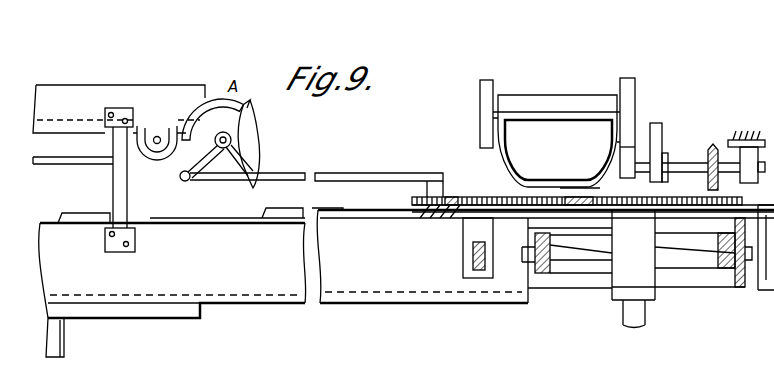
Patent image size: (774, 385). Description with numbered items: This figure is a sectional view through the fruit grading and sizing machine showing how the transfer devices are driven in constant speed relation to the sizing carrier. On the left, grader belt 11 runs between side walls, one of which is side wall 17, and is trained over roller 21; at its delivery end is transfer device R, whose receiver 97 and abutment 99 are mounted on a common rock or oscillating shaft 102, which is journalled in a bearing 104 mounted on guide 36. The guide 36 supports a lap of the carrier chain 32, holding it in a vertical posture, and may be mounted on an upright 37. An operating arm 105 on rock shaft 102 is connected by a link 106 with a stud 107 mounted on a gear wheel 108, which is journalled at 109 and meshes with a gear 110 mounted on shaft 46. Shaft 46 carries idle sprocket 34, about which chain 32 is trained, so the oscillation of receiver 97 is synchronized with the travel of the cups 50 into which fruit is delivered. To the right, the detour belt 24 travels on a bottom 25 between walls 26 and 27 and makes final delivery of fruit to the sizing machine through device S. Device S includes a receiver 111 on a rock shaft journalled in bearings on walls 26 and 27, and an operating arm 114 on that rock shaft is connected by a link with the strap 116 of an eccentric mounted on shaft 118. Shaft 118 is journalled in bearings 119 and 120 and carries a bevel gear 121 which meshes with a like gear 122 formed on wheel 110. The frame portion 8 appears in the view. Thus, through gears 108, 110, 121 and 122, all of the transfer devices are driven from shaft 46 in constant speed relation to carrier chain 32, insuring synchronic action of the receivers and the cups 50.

The frame 8 is at (470, 160).
The grader belt 11 is at (48, 154).
The side wall 17 is at (74, 102).
The roller 21 is at (153, 152).
The detour belt 24 is at (566, 95).
The bottom 25 is at (8, 139).
The wall 26 is at (485, 82).
The wall 27 is at (629, 80).
The chain 32 is at (357, 222).
The idle sprocket 34 is at (589, 258).
The guide 36 is at (270, 275).
The upright 37 is at (62, 340).
The shaft 46 is at (628, 321).
The cup 50 is at (72, 204).
The receiver 97 is at (244, 151).
The abutment 99 is at (230, 99).
The rock shaft 102 is at (229, 136).
The bearing 104 is at (216, 196).
The operating arm 105 is at (182, 178).
The link 106 is at (348, 172).
The stud 107 is at (434, 185).
The gear wheel 108 is at (452, 205).
The journal 109 is at (478, 232).
The gear 110 is at (586, 202).
The receiver 111 is at (538, 150).
The operating arm 114 is at (656, 150).
The strap 116 is at (668, 176).
The shaft 118 is at (685, 163).
The bearing 119 is at (632, 152).
The bearing 120 is at (746, 157).
The bevel gear 121 is at (713, 146).
The bevel gear 122 is at (606, 190).